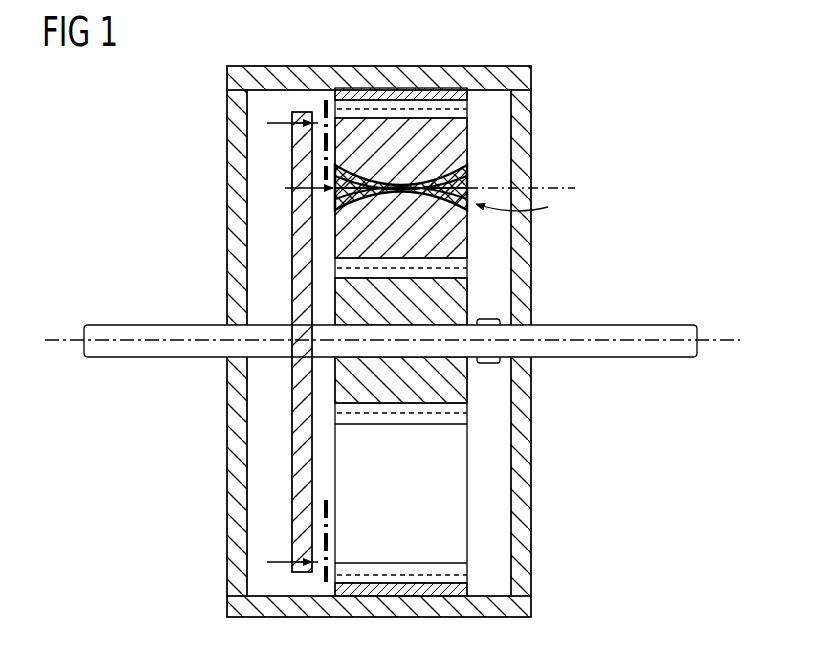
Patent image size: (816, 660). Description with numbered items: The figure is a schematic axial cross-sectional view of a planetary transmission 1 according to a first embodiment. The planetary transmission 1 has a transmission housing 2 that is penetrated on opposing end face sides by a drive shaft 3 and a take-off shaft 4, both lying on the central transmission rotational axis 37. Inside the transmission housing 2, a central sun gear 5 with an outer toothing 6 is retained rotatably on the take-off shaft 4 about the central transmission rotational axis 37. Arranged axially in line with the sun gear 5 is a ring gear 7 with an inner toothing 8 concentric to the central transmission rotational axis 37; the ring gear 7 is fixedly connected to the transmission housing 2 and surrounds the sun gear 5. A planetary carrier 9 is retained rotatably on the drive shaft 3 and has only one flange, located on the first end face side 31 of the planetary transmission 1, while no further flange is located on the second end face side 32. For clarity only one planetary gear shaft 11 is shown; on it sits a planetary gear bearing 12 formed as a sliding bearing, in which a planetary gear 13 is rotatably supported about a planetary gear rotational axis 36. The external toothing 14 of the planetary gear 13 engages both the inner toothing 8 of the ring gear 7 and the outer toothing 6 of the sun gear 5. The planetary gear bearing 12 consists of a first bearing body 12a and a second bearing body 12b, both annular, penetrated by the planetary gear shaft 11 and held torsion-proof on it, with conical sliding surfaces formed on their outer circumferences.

The planetary transmission 1 is at (612, 80).
The transmission housing 2 is at (533, 97).
The drive shaft 3 is at (148, 323).
The take-off shaft 4 is at (636, 325).
The sun gear 5 is at (465, 378).
The outer toothing 6 is at (465, 411).
The ring gear 7 is at (362, 95).
The inner toothing 8 is at (388, 100).
The planetary carrier 9 is at (300, 262).
The planetary gear shaft 11 is at (318, 182).
The planetary gear bearing 12 is at (330, 201).
The first bearing body 12a is at (300, 190).
The second bearing body 12b is at (533, 206).
The planetary gear 13 is at (445, 113).
The external toothing 14 is at (412, 106).
The first end face side 31 is at (198, 514).
The second end face side 32 is at (562, 514).
The planetary gear rotational axis 36 is at (565, 182).
The central transmission rotational axis 37 is at (729, 338).